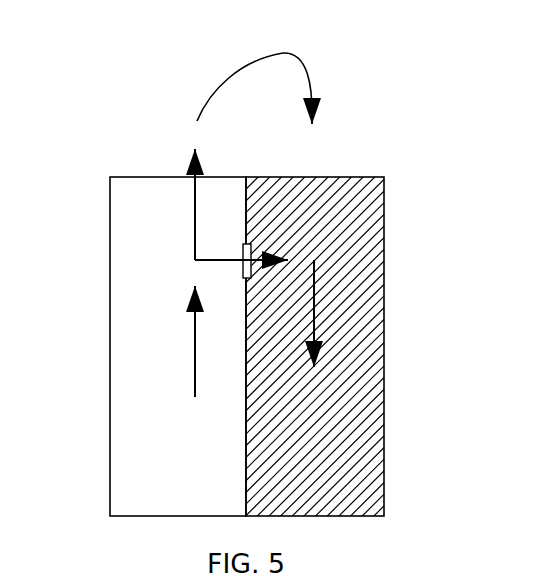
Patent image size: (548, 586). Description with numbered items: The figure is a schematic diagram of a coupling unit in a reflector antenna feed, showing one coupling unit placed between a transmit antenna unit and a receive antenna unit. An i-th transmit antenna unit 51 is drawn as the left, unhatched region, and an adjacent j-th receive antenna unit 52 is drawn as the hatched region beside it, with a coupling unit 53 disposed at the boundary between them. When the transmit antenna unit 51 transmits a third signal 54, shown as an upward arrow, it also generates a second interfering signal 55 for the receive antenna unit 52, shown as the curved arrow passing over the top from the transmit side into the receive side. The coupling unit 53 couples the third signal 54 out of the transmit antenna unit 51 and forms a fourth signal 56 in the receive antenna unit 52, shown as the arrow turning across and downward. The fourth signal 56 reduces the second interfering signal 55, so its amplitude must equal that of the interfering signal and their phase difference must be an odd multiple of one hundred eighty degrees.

The transmit antenna unit 51 is at (110, 347).
The receive antenna unit 52 is at (384, 340).
The coupling unit 53 is at (247, 284).
The third signal 54 is at (195, 375).
The second interfering signal 55 is at (308, 72).
The fourth signal 56 is at (315, 330).